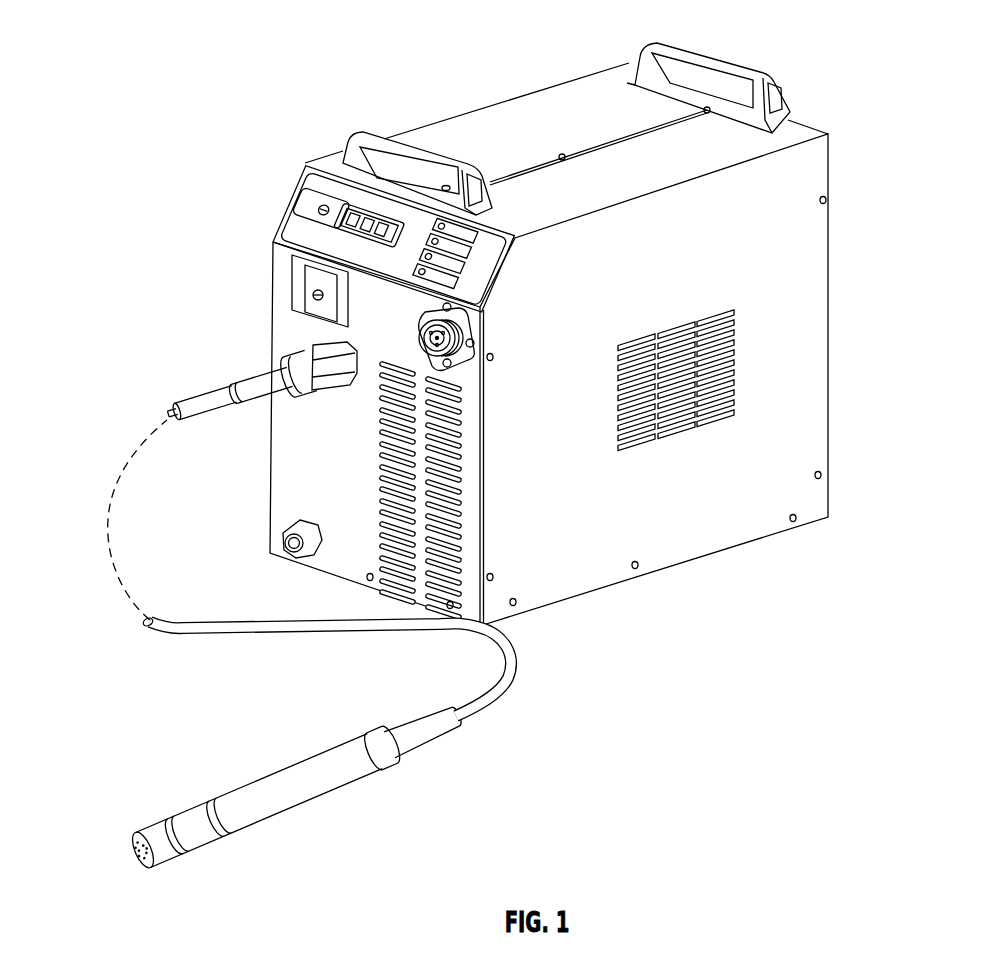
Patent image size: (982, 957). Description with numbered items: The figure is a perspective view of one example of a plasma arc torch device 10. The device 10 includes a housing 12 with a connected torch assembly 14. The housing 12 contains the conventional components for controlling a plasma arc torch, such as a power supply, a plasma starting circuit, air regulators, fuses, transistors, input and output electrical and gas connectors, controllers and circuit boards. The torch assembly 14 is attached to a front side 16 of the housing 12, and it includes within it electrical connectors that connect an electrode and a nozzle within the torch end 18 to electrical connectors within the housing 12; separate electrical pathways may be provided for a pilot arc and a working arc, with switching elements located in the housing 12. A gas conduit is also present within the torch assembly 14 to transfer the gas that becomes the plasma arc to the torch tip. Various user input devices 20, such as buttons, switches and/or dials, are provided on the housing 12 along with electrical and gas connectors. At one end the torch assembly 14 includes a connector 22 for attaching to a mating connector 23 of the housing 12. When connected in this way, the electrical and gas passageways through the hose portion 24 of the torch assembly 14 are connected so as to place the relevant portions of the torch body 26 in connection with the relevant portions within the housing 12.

The plasma arc torch device 10 is at (400, 92).
The housing 12 is at (562, 105).
The torch assembly 14 is at (80, 627).
The front side 16 is at (470, 407).
The torch end 18 is at (196, 775).
The user input devices 20 is at (260, 207).
The connector 22 is at (335, 390).
The mating connector 23 is at (463, 328).
The hose portion 24 is at (300, 633).
The torch body 26 is at (290, 812).